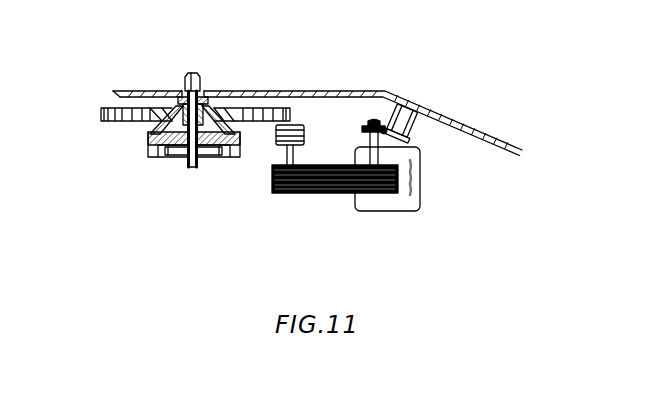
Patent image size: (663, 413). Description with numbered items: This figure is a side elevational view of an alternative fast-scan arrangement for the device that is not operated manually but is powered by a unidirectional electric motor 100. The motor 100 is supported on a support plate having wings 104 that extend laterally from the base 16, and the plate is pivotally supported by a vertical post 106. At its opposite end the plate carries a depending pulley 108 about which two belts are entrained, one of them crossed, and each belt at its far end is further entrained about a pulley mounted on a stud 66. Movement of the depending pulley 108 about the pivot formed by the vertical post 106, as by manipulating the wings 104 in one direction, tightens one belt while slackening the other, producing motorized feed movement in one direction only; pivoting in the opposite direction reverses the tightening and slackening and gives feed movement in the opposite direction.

The base 16 is at (132, 88).
The stud 66 is at (202, 74).
The unidirectional electric motor 100 is at (317, 193).
The wings 104 is at (418, 168).
The vertical post 106 is at (368, 134).
The depending pulley 108 is at (287, 150).